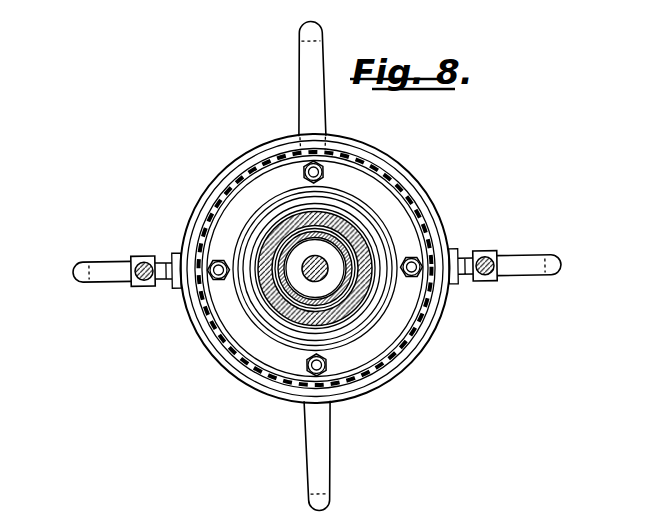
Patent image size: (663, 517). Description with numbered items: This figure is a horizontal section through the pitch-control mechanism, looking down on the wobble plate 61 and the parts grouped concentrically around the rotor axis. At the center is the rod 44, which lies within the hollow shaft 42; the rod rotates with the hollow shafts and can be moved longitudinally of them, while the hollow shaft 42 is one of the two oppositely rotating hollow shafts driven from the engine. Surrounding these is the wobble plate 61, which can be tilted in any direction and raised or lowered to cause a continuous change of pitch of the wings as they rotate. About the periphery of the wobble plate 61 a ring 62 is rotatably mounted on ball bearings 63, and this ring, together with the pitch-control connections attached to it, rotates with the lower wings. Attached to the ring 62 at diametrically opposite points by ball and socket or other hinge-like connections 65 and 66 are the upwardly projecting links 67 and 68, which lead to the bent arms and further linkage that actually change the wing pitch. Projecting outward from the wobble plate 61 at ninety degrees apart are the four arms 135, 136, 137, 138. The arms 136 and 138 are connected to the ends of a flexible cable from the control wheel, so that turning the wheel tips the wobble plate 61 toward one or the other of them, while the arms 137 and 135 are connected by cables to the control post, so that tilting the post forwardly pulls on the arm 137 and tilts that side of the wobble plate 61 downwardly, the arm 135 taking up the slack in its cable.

The hollow shaft 42 is at (340, 248).
The rod 44 is at (304, 264).
The wobble plate 61 is at (249, 199).
The ring 62 is at (190, 229).
The ball bearings 63 is at (425, 234).
The hinge-like connection 65 is at (137, 255).
The hinge-like connection 66 is at (497, 252).
The link 67 is at (145, 279).
The link 68 is at (486, 276).
The arm 135 is at (308, 497).
The arm 136 is at (84, 282).
The arm 137 is at (302, 40).
The arm 138 is at (550, 274).